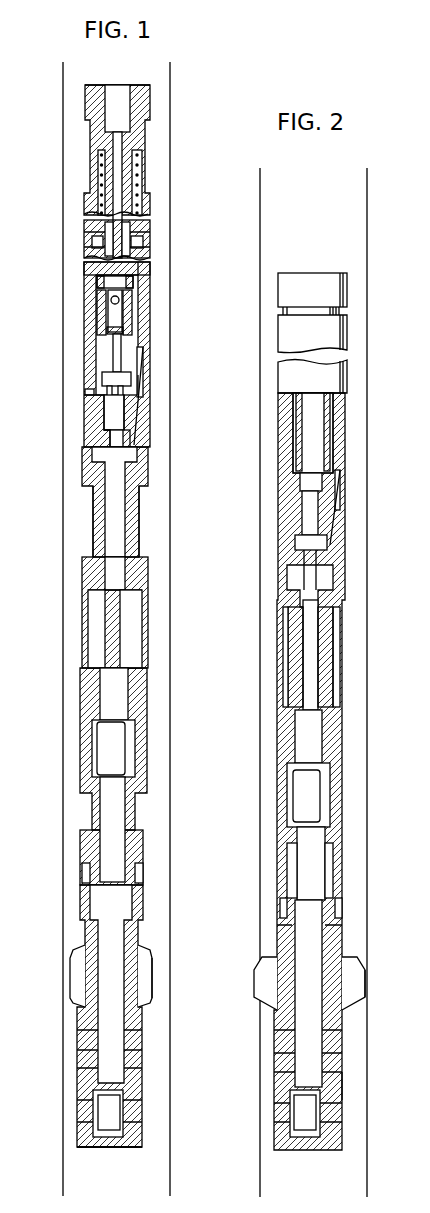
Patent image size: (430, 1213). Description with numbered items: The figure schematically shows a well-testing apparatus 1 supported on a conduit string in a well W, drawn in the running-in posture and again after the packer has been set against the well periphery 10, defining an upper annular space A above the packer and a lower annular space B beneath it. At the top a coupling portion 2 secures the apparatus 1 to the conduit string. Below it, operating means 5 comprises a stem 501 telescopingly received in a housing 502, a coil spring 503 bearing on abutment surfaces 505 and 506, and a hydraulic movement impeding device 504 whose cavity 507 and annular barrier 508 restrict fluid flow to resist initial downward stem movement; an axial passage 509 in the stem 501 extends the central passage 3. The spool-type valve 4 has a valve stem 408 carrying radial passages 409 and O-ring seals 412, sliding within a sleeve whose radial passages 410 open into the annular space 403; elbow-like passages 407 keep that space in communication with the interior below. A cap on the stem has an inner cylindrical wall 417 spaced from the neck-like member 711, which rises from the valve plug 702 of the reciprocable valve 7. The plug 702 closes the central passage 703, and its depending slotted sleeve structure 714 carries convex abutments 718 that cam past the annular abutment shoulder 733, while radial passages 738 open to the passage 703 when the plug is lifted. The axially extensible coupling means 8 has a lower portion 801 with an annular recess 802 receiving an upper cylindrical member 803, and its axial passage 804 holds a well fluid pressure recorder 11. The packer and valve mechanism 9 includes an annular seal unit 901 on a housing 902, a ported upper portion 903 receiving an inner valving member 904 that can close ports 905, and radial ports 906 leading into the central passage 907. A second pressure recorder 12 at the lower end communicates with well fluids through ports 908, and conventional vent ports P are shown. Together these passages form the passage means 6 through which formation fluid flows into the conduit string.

In FIG. 1, the apparatus 1 is at (78, 121).
In FIG. 1, the coupling portion 2 is at (150, 95).
In FIG. 2, the coupling portion 2 is at (350, 297).
In FIG. 1, the well fluid transmitting passage 3 is at (134, 300).
In FIG. 2, the well fluid transmitting passage 3 is at (310, 420).
In FIG. 1, the spool-type valve 4 is at (146, 325).
In FIG. 1, the operating means 5 is at (92, 172).
In FIG. 2, the operating means 5 is at (350, 341).
In FIG. 1, the passage means 6 is at (120, 455).
In FIG. 1, the axially reciprocable valve 7 is at (150, 385).
In FIG. 1, the axially extensible coupling means 8 is at (140, 560).
In FIG. 1, the combination packer and valve mechanism 9 is at (145, 927).
In FIG. 2, the combination packer and valve mechanism 9 is at (340, 935).
In FIG. 1, the well periphery 10 is at (153, 958).
In FIG. 2, the well periphery 10 is at (360, 958).
In FIG. 1, the well fluid pressure recorder 11 is at (117, 755).
In FIG. 2, the well fluid pressure recorder 11 is at (305, 803).
In FIG. 1, the second well fluid pressure recorder 12 is at (110, 1110).
In FIG. 2, the second well fluid pressure recorder 12 is at (312, 1110).
In FIG. 1, the well W is at (161, 122).
In FIG. 2, the well W is at (350, 247).
In FIG. 1, the vent ports P is at (145, 618).
In FIG. 2, the upper annular space A is at (352, 897).
In FIG. 2, the lower annular space B is at (353, 1083).
In FIG. 1, the annular space 403 is at (145, 370).
In FIG. 1, the elbow-like tubular passages 407 is at (145, 405).
In FIG. 1, the spool-like valve stem and body 408 is at (90, 270).
In FIG. 2, the spool-like valve stem and body 408 is at (310, 445).
In FIG. 1, the radially extending passages 409 is at (100, 284).
In FIG. 2, the radially extending passages 409 is at (298, 474).
In FIG. 1, the radial passages 410 is at (141, 350).
In FIG. 2, the radial passages 410 is at (335, 472).
In FIG. 1, the O-ring type elastomeric seals 412 is at (96, 302).
In FIG. 1, the inner cylindrical wall 417 is at (100, 320).
In FIG. 1, the stem 501 is at (91, 253).
In FIG. 1, the housing 502 is at (139, 241).
In FIG. 1, the coil spring 503 is at (141, 172).
In FIG. 1, the hydraulic movement impeding device 504 is at (93, 240).
In FIG. 1, the upper abutment surface 505 is at (137, 150).
In FIG. 1, the lower abutment surface 506 is at (140, 230).
In FIG. 1, the cavity 507 is at (140, 278).
In FIG. 1, the annular barrier 508 is at (125, 254).
In FIG. 1, the axial passage 509 is at (112, 88).
In FIG. 1, the valve plug 702 is at (104, 378).
In FIG. 2, the valve plug 702 is at (325, 548).
In FIG. 1, the central passage 703 is at (104, 412).
In FIG. 2, the central passage 703 is at (330, 530).
In FIG. 1, the neck-like member 711 is at (115, 350).
In FIG. 1, the slotted sleeve structure 714 is at (140, 425).
In FIG. 1, the convex abutment 718 is at (142, 437).
In FIG. 1, the annular abutment shoulder 733 is at (110, 448).
In FIG. 1, the radially extending passages 738 is at (88, 393).
In FIG. 1, the lower portion 801 is at (145, 592).
In FIG. 2, the lower portion 801 is at (345, 615).
In FIG. 1, the annular recess 802 is at (132, 640).
In FIG. 2, the annular recess 802 is at (333, 688).
In FIG. 1, the upper cylindrical member 803 is at (132, 517).
In FIG. 2, the upper cylindrical member 803 is at (320, 650).
In FIG. 1, the axial passage 804 is at (115, 695).
In FIG. 1, the annular seal unit 901 is at (151, 988).
In FIG. 2, the annular seal unit 901 is at (345, 985).
In FIG. 1, the housing 902 is at (135, 1020).
In FIG. 1, the upper portion 903 is at (140, 832).
In FIG. 1, the inner valving member 904 is at (133, 855).
In FIG. 2, the inner valving member 904 is at (335, 888).
In FIG. 1, the ports 905 is at (143, 887).
In FIG. 2, the ports 905 is at (345, 903).
In FIG. 1, the radial ports 906 is at (140, 1068).
In FIG. 2, the radial ports 906 is at (340, 1030).
In FIG. 1, the central passage 907 is at (110, 1043).
In FIG. 1, the ports 908 is at (140, 1125).